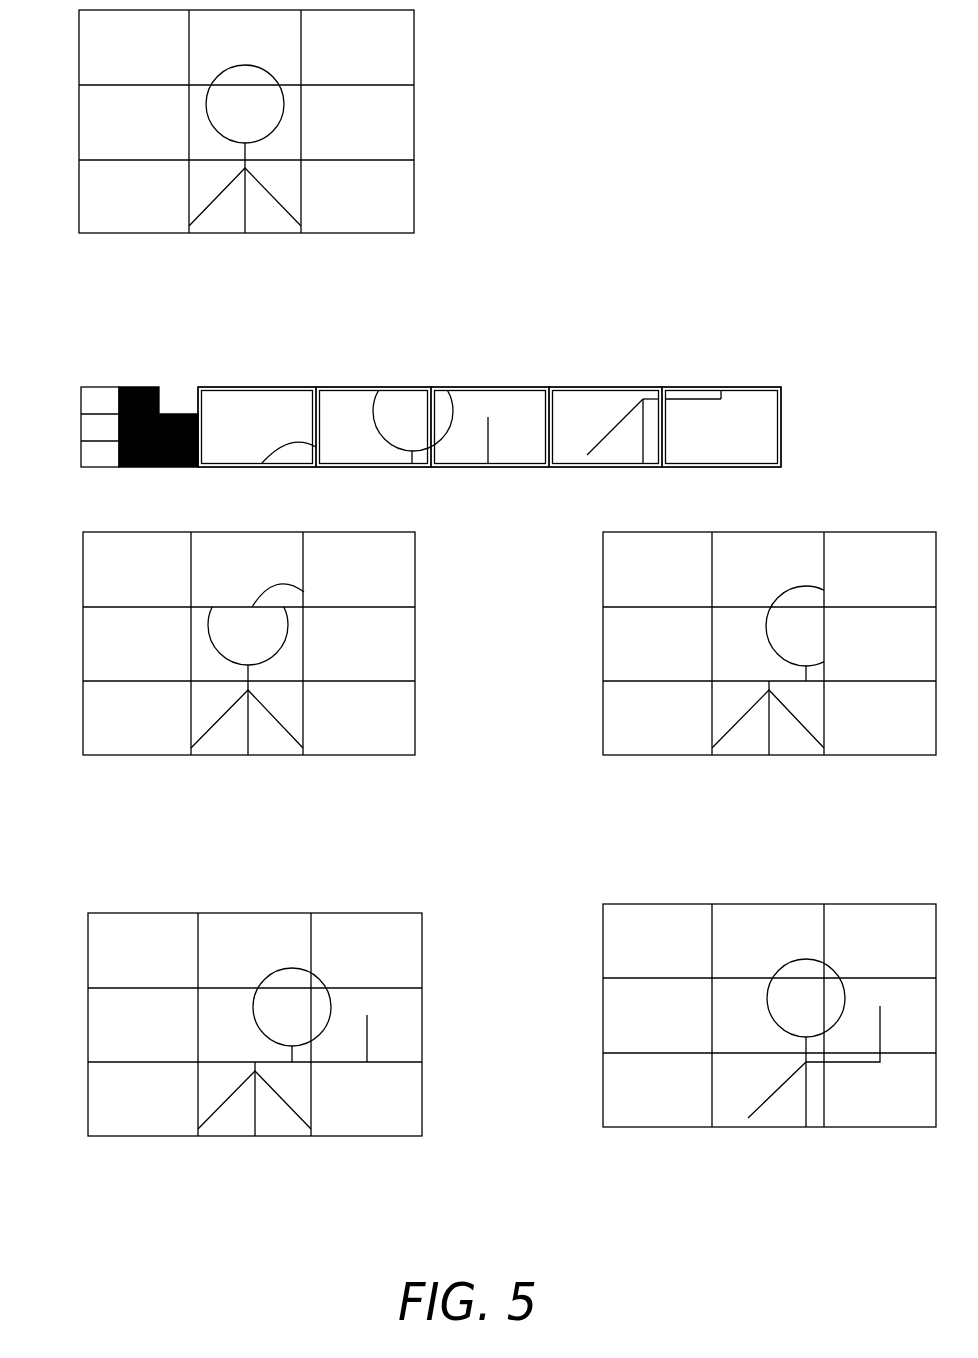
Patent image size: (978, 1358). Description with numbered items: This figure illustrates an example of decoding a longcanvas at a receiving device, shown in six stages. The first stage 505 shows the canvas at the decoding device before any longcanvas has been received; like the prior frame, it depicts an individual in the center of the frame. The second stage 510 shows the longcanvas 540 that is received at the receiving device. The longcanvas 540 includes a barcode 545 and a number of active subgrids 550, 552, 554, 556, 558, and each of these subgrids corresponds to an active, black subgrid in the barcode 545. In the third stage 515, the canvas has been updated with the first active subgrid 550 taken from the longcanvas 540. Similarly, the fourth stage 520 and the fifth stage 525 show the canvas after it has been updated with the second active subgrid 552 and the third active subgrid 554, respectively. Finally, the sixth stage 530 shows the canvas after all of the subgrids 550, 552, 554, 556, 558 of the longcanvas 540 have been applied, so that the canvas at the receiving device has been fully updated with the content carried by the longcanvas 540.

The first stage 505 is at (145, 284).
The second stage 510 is at (147, 507).
The third stage 515 is at (145, 806).
The fourth stage 520 is at (669, 806).
The fifth stage 525 is at (145, 1177).
The sixth stage 530 is at (669, 1177).
The longcanvas 540 is at (90, 362).
The barcode 545 is at (159, 387).
The first active subgrid 550 is at (272, 387).
The second active subgrid 552 is at (378, 387).
The third active subgrid 554 is at (488, 387).
The fourth active subgrid 556 is at (597, 387).
The fifth active subgrid 558 is at (705, 387).